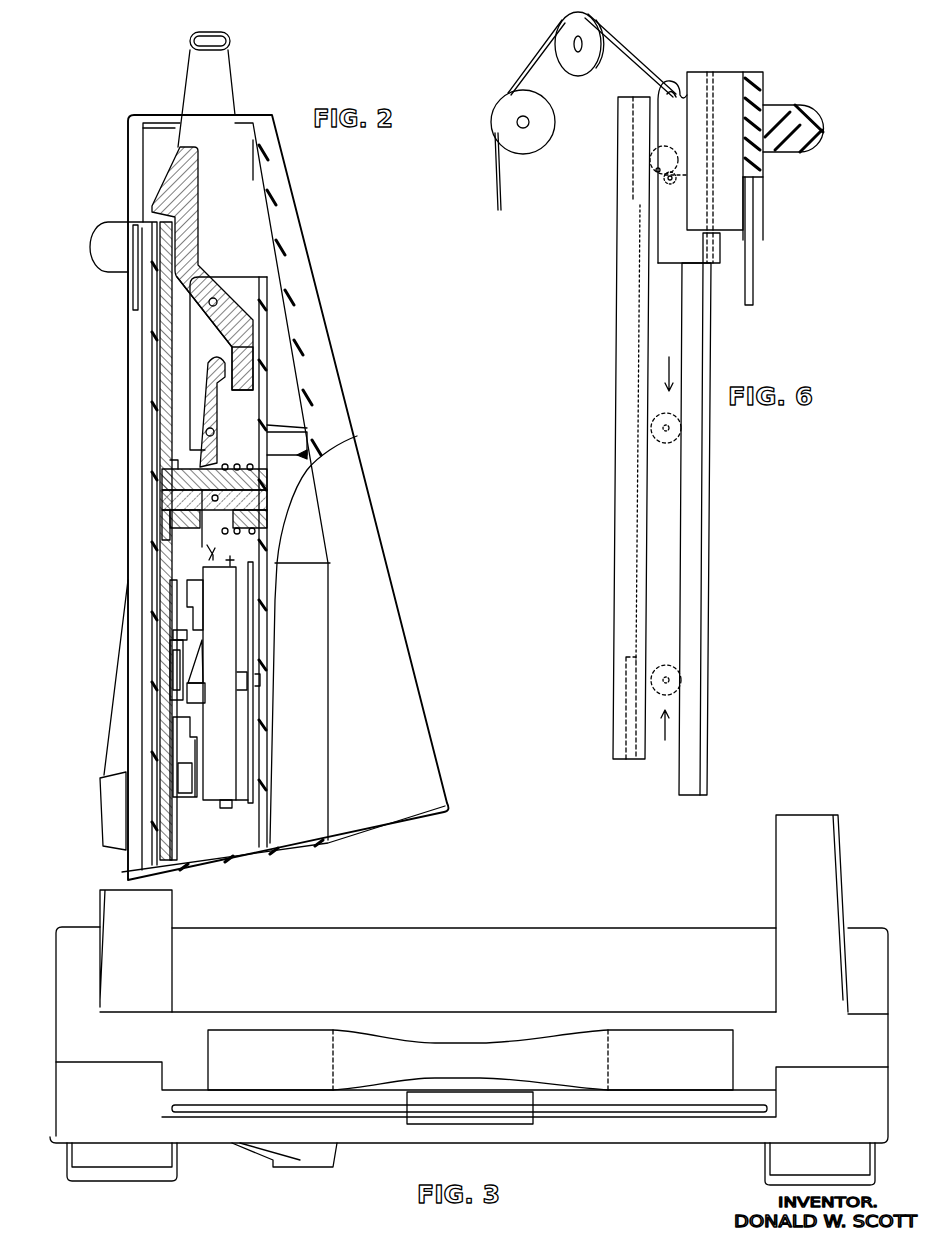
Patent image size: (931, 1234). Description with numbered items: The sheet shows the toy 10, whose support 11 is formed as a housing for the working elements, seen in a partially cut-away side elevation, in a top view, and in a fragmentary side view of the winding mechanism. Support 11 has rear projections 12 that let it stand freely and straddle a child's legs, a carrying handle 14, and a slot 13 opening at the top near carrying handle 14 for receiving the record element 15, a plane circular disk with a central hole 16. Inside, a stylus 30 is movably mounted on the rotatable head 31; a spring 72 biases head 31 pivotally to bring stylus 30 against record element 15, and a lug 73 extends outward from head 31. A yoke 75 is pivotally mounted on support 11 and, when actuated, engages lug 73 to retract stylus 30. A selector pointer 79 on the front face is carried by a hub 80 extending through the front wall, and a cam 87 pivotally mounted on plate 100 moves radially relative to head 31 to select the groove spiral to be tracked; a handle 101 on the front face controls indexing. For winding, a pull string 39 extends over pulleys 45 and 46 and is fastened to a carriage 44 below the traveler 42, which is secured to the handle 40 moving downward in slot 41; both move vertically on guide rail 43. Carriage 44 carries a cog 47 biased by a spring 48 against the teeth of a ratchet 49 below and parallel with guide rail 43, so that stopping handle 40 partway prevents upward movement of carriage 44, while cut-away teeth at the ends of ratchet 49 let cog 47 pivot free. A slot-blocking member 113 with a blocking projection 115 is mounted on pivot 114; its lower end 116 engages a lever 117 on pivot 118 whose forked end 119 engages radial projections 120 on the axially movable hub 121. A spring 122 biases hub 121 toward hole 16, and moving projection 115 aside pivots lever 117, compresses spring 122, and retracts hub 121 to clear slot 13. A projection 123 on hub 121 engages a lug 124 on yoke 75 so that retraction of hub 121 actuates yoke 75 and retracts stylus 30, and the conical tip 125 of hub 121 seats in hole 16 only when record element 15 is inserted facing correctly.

In FIG. 2, the toy 10 is at (306, 202).
In FIG. 2, the support 11 is at (273, 297).
In FIG. 6, the support 11 is at (753, 277).
In FIG. 2, the rear projections 12 is at (427, 815).
In FIG. 3, the rear projections 12 is at (163, 916).
In FIG. 2, the slot 13 is at (168, 128).
In FIG. 3, the slot 13 is at (232, 1097).
In FIG. 2, the carrying handle 14 is at (229, 40).
In FIG. 3, the carrying handle 14 is at (568, 1075).
In FIG. 2, the record element 15 is at (162, 352).
In FIG. 3, the record element 15 is at (377, 1108).
In FIG. 2, the central hole 16 is at (162, 488).
In FIG. 2, the stylus 30 is at (170, 692).
In FIG. 2, the rotatable head 31 is at (228, 660).
In FIG. 6, the pull string 39 is at (627, 52).
In FIG. 6, the handle 40 is at (817, 113).
In FIG. 3, the handle 40 is at (778, 1168).
In FIG. 6, the slot 41 is at (750, 230).
In FIG. 6, the traveler 42 is at (727, 82).
In FIG. 6, the guide rail 43 is at (707, 351).
In FIG. 6, the carriage 44 is at (675, 88).
In FIG. 6, the pulley 45 is at (568, 22).
In FIG. 6, the pulley 46 is at (545, 113).
In FIG. 6, the cog 47 is at (623, 147).
In FIG. 6, the spring 48 is at (688, 172).
In FIG. 6, the ratchet 49 is at (627, 190).
In FIG. 2, the spring 72 is at (253, 666).
In FIG. 2, the lug 73 is at (204, 678).
In FIG. 2, the yoke 75 is at (206, 554).
In FIG. 2, the selector pointer 79 is at (120, 733).
In FIG. 2, the hub 80 is at (112, 808).
In FIG. 2, the cam 87 is at (177, 594).
In FIG. 2, the plate 100 is at (173, 341).
In FIG. 3, the handle 101 is at (143, 1172).
In FIG. 2, the slot-blocking member 113 is at (195, 249).
In FIG. 2, the pivot 114 is at (216, 300).
In FIG. 2, the blocking projection 115 is at (163, 190).
In FIG. 3, the blocking projection 115 is at (516, 1118).
In FIG. 2, the lower end 116 is at (248, 377).
In FIG. 2, the lever 117 is at (212, 403).
In FIG. 2, the pivot 118 is at (214, 432).
In FIG. 2, the forked end 119 is at (214, 466).
In FIG. 2, the radial projections 120 is at (268, 507).
In FIG. 2, the hub 121 is at (262, 498).
In FIG. 2, the spring 122 is at (287, 442).
In FIG. 2, the projection 123 is at (216, 534).
In FIG. 2, the lug 124 is at (225, 687).
In FIG. 2, the conical tip 125 is at (170, 510).